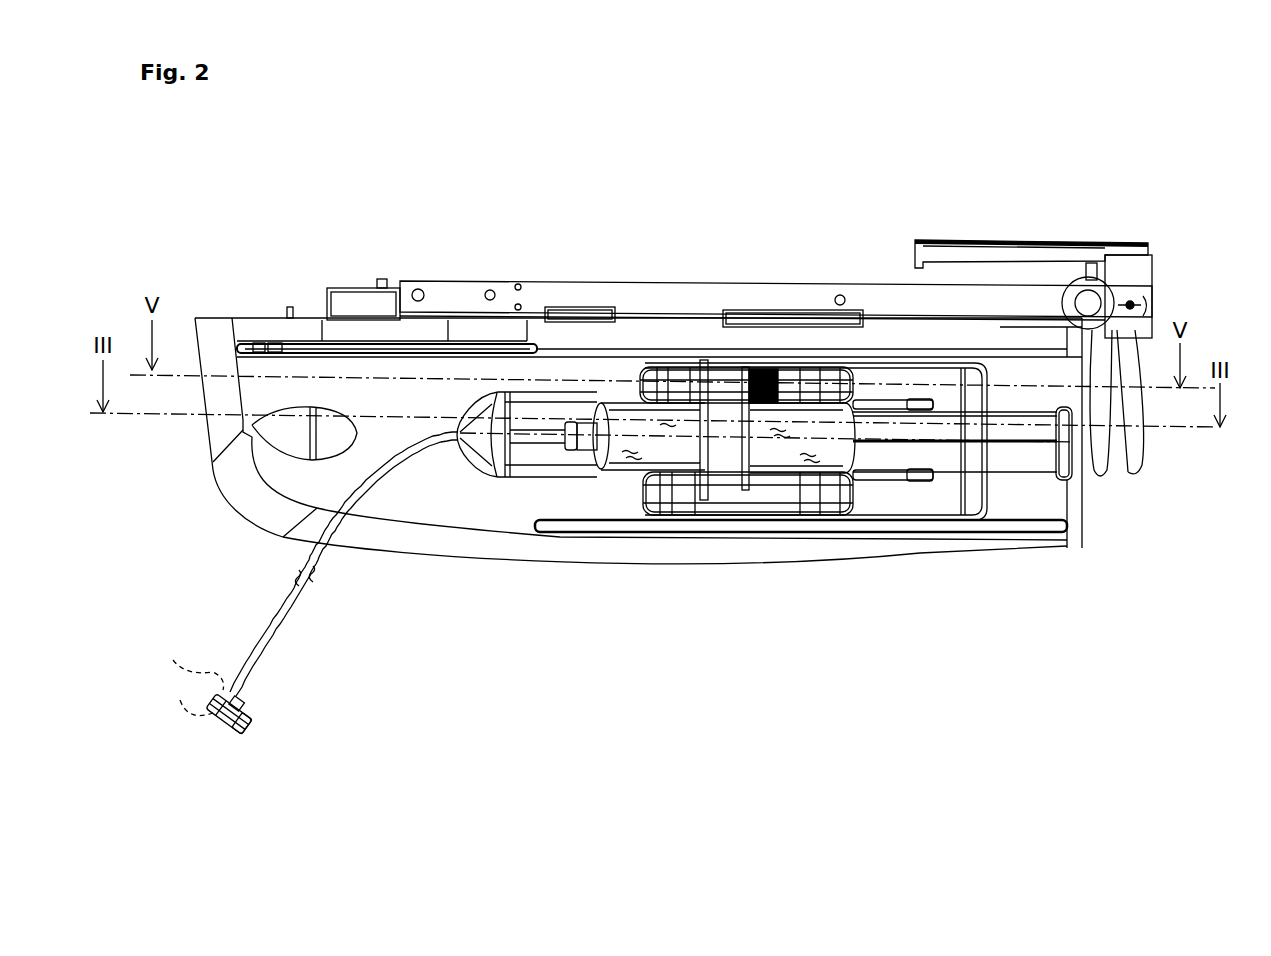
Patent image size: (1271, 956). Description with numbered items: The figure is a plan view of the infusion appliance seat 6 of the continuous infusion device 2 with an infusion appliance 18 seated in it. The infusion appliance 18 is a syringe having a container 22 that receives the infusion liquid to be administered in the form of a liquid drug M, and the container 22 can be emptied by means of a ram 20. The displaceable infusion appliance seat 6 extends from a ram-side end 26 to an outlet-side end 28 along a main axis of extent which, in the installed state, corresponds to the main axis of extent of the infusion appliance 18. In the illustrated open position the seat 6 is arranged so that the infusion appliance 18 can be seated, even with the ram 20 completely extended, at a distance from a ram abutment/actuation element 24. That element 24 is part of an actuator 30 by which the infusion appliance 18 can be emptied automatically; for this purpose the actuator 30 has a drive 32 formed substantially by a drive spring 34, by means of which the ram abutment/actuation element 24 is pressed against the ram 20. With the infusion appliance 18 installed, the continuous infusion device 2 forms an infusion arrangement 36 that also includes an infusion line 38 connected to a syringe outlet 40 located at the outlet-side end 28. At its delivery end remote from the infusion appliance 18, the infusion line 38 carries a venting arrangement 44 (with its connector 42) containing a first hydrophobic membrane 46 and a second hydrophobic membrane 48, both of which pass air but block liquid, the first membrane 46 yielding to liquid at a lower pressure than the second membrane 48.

The continuous infusion device 2 is at (855, 565).
The infusion appliance seat 6 is at (538, 485).
The infusion appliance 18 is at (860, 466).
The ram 20 is at (1027, 460).
The container 22 is at (810, 460).
The ram abutment/actuation element 24 is at (1100, 448).
The ram-side end 26 is at (1070, 487).
The outlet-side end 28 is at (480, 483).
The actuator 30 is at (1155, 248).
The drive 32 is at (1063, 282).
The drive spring 34 is at (1087, 267).
The infusion arrangement 36 is at (912, 643).
The infusion line 38 is at (262, 652).
The syringe outlet 40 is at (583, 425).
The connector 42 is at (255, 710).
The venting arrangement 44 is at (252, 724).
The first hydrophobic membrane 46 is at (186, 665).
The second hydrophobic membrane 48 is at (178, 702).
The liquid drug M is at (625, 455).